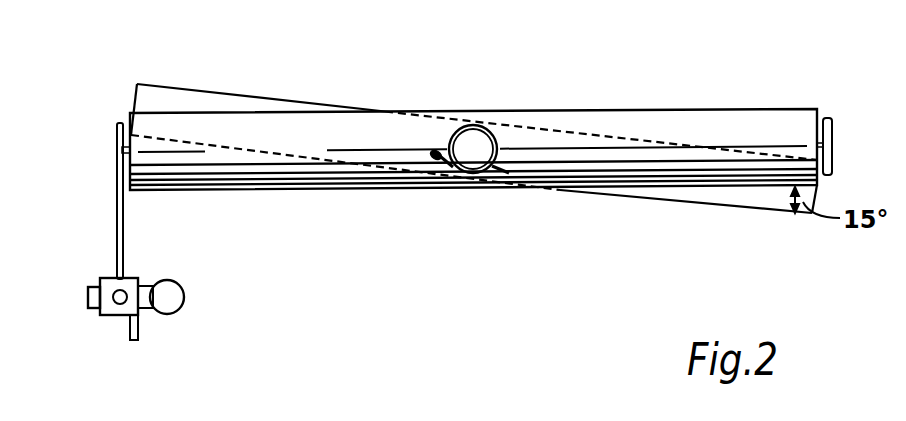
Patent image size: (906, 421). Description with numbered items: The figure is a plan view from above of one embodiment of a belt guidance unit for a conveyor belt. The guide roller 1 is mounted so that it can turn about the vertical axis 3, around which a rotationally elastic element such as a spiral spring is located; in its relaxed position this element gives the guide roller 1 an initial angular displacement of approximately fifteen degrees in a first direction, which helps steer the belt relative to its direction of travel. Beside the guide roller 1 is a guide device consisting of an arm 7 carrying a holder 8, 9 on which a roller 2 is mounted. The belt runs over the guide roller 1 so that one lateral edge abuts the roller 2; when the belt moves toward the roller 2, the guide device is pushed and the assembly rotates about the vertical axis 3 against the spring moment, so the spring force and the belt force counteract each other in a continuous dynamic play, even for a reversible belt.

The guide roller 1 is at (757, 128).
The roller 2 is at (170, 297).
The vertical axis 3 is at (474, 142).
The arm 7 is at (118, 233).
The holder 8 is at (93, 297).
The holder 9 is at (108, 308).